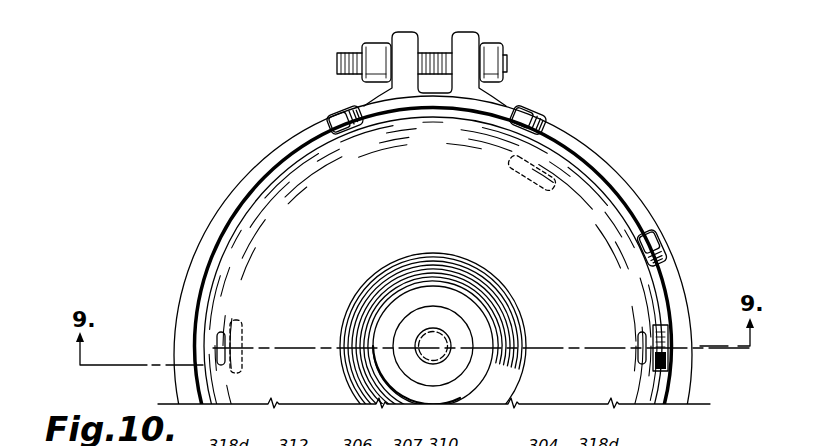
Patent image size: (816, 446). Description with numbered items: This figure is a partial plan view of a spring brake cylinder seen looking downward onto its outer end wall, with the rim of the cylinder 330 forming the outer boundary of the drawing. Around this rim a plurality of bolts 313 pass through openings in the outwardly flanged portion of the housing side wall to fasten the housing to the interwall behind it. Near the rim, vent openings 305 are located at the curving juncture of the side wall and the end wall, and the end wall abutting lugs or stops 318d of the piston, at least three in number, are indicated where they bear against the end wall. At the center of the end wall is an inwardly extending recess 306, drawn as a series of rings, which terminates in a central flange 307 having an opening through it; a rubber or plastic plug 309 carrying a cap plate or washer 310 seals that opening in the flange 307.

The rim 330 is at (260, 157).
The bolts 313 is at (340, 111).
The vent openings 305 is at (224, 330).
The end wall abutting lugs or stops 318d is at (244, 325).
The recess 306 is at (517, 321).
The central flange 307 is at (478, 368).
The cap plate or washer 310 is at (413, 317).
The rubber or plastic plug 309 is at (456, 318).